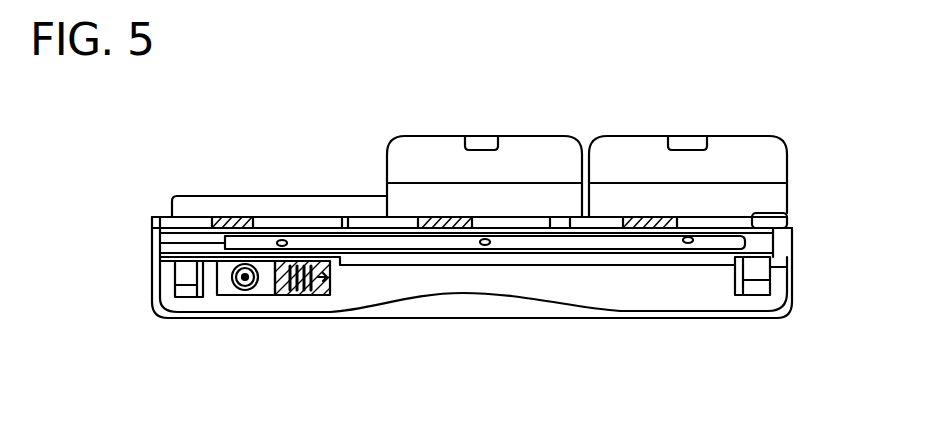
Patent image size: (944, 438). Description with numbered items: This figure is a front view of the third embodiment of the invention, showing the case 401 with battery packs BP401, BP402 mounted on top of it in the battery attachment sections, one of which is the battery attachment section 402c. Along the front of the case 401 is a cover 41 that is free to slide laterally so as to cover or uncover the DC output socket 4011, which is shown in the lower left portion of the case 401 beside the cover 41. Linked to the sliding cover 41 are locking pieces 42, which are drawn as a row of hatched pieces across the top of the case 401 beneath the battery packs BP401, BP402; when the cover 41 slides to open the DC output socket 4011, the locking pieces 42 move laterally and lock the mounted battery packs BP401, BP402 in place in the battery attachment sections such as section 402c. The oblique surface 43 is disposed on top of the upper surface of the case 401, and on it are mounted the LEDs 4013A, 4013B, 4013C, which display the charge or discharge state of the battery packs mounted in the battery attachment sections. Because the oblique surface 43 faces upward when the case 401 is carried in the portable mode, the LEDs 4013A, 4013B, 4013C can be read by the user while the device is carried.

The case 401 is at (194, 318).
The battery attachment section 402c is at (190, 207).
The battery pack BP401 is at (755, 148).
The battery pack BP402 is at (408, 148).
The locking pieces 42 is at (248, 222).
The oblique surface 43 is at (170, 243).
The cover 41 is at (301, 296).
The DC output socket 4011 is at (249, 296).
The LED 4013A is at (687, 246).
The LED 4013B is at (487, 246).
The LED 4013C is at (284, 245).